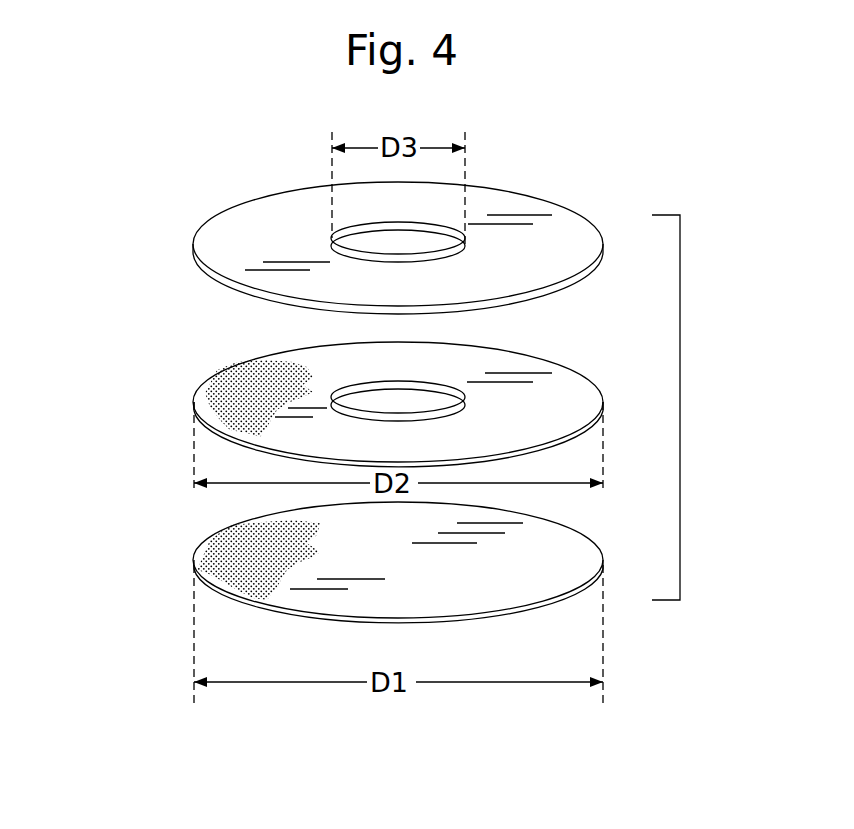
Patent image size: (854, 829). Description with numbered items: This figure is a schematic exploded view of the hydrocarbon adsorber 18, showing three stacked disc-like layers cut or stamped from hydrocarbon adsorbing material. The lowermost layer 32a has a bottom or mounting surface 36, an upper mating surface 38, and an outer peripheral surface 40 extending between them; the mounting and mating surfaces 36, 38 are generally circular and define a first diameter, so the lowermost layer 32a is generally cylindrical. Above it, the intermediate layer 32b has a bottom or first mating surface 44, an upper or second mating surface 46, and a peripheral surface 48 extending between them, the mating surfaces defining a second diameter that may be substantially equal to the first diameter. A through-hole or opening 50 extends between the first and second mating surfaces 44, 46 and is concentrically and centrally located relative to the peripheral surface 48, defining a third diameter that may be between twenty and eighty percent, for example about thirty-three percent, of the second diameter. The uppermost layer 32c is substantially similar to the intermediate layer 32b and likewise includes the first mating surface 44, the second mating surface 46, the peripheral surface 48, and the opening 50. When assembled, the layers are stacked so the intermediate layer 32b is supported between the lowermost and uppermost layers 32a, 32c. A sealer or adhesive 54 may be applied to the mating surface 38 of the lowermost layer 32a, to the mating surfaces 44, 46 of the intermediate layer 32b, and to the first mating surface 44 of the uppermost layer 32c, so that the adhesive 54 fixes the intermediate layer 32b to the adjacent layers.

The hydrocarbon adsorber 18 is at (136, 158).
The lowermost layer 32a is at (566, 525).
The intermediate layer 32b is at (538, 356).
The uppermost layer 32c is at (518, 195).
The mounting surface 36 is at (273, 618).
The mating surface 38 is at (529, 583).
The peripheral surface 40 is at (330, 622).
The first mating surface 44 is at (225, 286).
The second mating surface 46 is at (526, 273).
The peripheral surface 48 is at (273, 295).
The opening 50 is at (393, 230).
The adhesive 54 is at (192, 400).